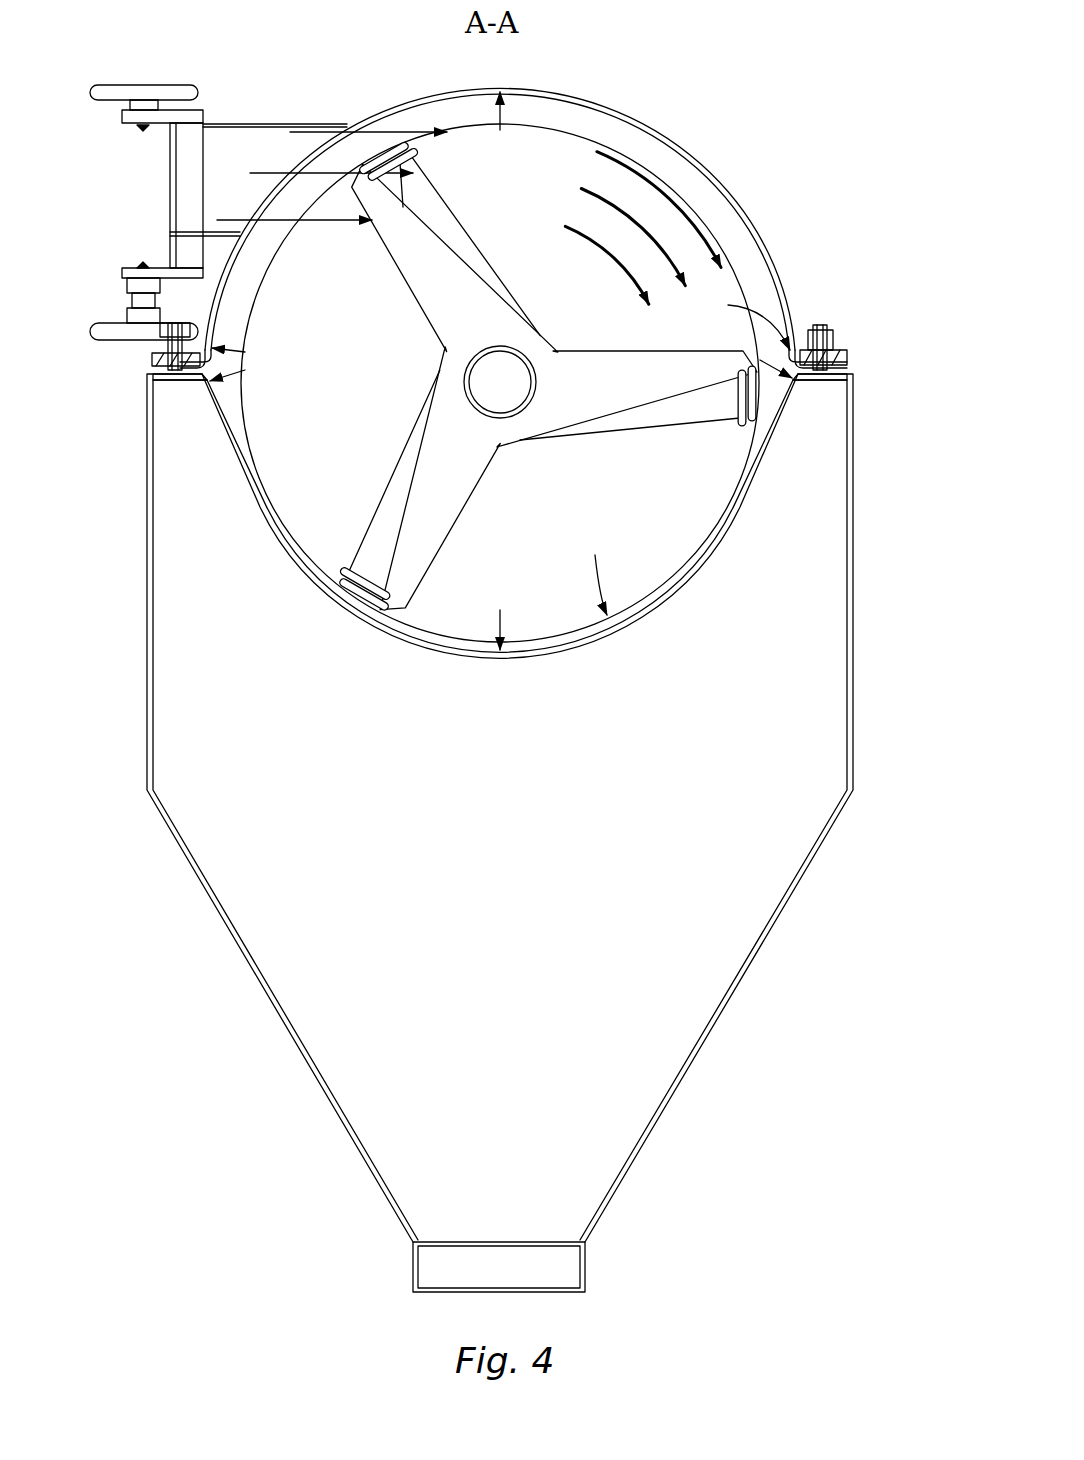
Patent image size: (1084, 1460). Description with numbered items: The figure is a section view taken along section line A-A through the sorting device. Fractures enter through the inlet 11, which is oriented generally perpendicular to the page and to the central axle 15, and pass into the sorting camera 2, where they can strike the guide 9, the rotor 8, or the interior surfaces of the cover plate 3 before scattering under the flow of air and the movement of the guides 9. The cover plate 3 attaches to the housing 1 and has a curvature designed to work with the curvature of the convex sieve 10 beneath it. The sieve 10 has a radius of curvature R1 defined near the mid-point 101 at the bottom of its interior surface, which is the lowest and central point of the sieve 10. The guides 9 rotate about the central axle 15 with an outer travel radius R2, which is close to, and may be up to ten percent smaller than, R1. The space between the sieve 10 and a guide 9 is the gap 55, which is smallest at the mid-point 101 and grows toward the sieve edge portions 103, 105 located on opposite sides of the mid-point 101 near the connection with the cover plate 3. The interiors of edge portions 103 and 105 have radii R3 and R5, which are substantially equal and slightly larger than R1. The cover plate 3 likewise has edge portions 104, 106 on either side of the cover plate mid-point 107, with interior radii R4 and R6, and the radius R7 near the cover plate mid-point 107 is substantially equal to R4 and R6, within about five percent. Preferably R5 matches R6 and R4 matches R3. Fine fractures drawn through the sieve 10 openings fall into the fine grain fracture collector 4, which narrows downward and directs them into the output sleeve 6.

The housing 1 is at (148, 370).
The sorting camera 2 is at (403, 122).
The cover plate 3 is at (580, 92).
The fine grain fracture collector 4 is at (818, 552).
The output sleeve 6 is at (448, 1262).
The rotor 8 is at (673, 372).
The guide 9 is at (372, 600).
The convex sieve 10 is at (752, 410).
The inlet 11 is at (210, 148).
The central axle 15 is at (480, 392).
The gap 55 is at (478, 647).
The mid-point 101 is at (500, 653).
The edge portion 103 is at (200, 392).
The edge portion 104 is at (160, 345).
The edge portion 105 is at (797, 382).
The edge portion 106 is at (760, 361).
The cover plate mid-point 107 is at (498, 84).
The radius of curvature R1 is at (498, 625).
The radius of curvature R2 is at (592, 571).
The radius of curvature R3 is at (243, 372).
The radius of curvature R4 is at (245, 352).
The radius of curvature R5 is at (760, 360).
The radius of curvature R6 is at (744, 320).
The radius of curvature R7 is at (497, 118).